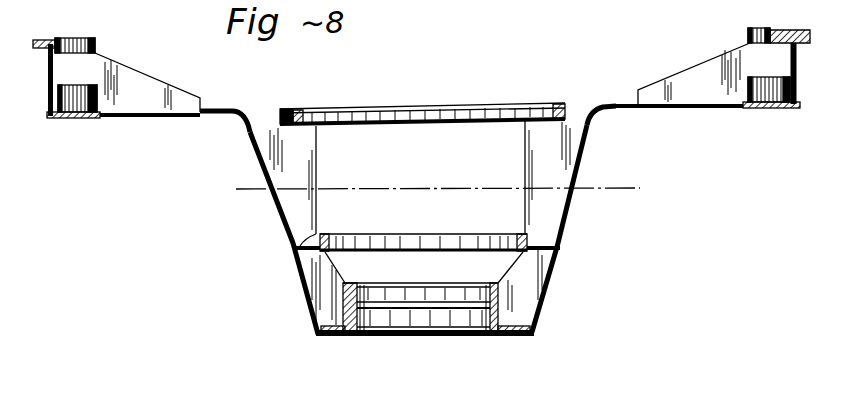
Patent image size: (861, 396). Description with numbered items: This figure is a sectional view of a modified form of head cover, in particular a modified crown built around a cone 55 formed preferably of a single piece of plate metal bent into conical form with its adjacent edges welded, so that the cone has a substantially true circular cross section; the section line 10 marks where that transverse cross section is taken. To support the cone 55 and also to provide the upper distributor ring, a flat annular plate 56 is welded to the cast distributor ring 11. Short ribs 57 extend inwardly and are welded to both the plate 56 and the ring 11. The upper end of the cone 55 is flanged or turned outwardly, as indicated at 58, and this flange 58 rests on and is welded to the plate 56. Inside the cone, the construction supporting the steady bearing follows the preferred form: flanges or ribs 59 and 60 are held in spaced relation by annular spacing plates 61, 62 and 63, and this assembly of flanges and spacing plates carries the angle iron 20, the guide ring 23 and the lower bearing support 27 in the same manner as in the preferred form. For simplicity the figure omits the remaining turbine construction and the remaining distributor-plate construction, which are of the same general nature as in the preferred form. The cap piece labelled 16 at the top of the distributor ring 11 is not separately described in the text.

The section line 10 is at (245, 187).
The cast distributor ring 11 is at (769, 109).
The flange cap 16 is at (776, 30).
The angle iron 20 is at (298, 116).
The guide ring 23 is at (334, 239).
The lower bearing support 27 is at (358, 340).
The cone 55 is at (580, 162).
The flat annular plate 56 is at (707, 117).
The short ribs 57 is at (702, 76).
The outwardly turned flange 58 is at (598, 107).
The flange 59 is at (303, 177).
The flange 60 is at (330, 283).
The annular spacing plate 61 is at (263, 121).
The annular spacing plate 62 is at (318, 240).
The annular spacing plate 63 is at (332, 338).